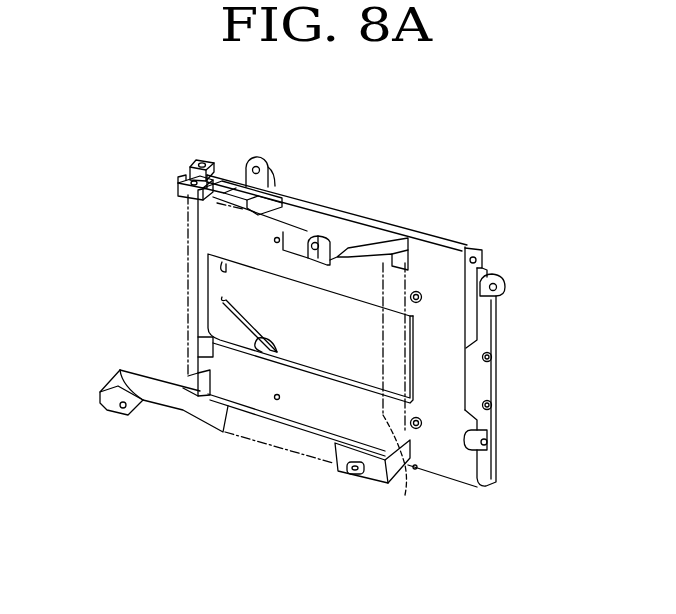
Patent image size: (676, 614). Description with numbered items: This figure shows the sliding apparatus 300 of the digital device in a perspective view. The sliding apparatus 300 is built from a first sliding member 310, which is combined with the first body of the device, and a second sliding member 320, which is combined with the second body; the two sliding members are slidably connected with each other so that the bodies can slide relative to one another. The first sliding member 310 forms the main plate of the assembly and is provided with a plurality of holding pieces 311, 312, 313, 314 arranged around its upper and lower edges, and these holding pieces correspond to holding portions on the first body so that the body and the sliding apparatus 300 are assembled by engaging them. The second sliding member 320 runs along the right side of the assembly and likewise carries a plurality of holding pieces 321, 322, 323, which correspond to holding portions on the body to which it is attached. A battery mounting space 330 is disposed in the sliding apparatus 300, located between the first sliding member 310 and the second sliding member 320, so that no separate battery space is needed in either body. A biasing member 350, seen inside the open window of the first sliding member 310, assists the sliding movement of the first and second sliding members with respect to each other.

The sliding apparatus 300 is at (505, 151).
The first sliding member 310 is at (268, 424).
The holding piece 311 is at (190, 173).
The holding piece 312 is at (317, 240).
The holding piece 313 is at (103, 392).
The holding piece 314 is at (353, 475).
The second sliding member 320 is at (499, 320).
The holding piece 321 is at (258, 156).
The holding piece 322 is at (506, 284).
The holding piece 323 is at (494, 442).
The battery mounting space 330 is at (416, 465).
The biasing member 350 is at (237, 330).